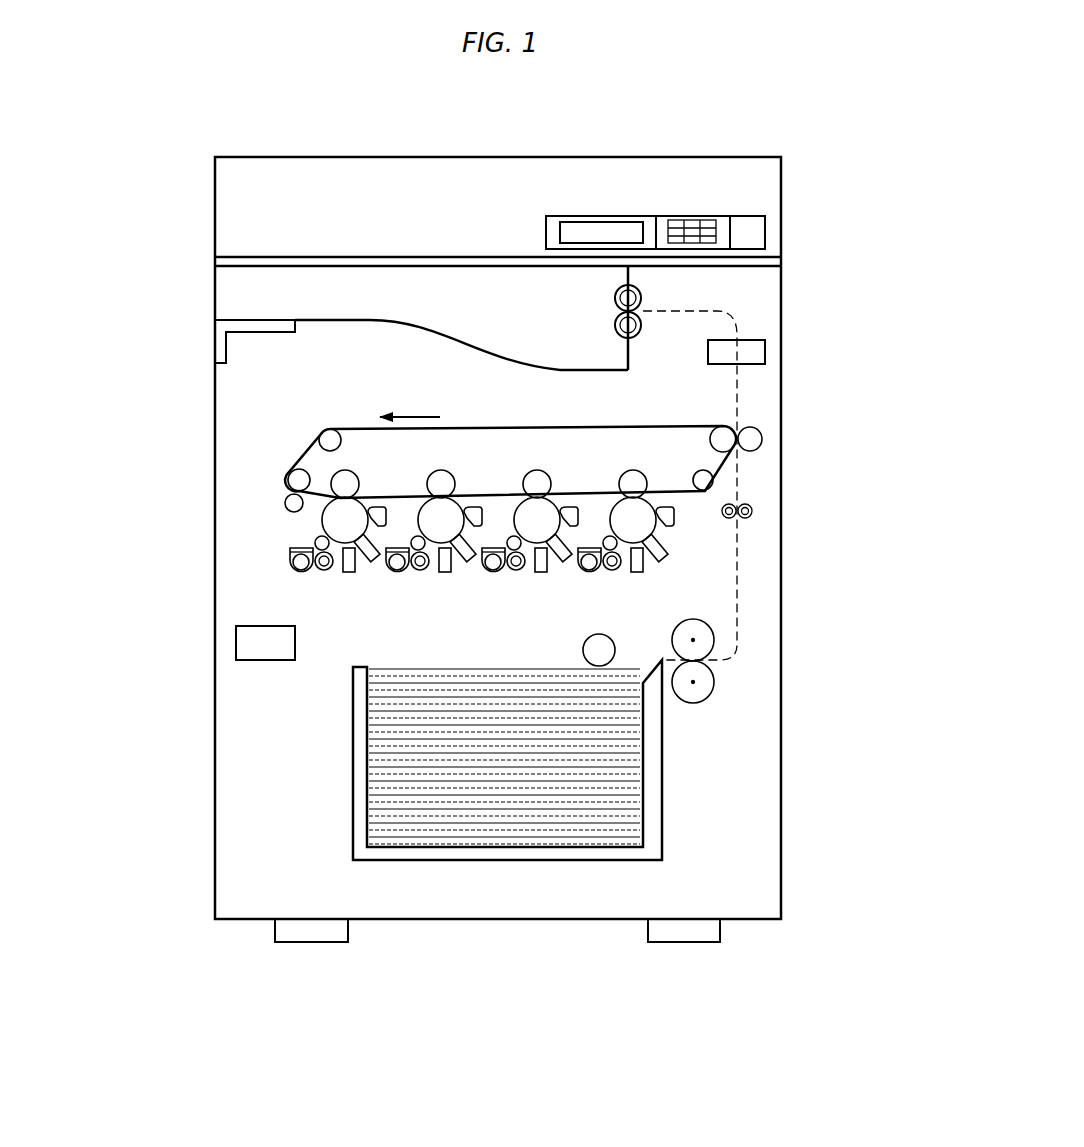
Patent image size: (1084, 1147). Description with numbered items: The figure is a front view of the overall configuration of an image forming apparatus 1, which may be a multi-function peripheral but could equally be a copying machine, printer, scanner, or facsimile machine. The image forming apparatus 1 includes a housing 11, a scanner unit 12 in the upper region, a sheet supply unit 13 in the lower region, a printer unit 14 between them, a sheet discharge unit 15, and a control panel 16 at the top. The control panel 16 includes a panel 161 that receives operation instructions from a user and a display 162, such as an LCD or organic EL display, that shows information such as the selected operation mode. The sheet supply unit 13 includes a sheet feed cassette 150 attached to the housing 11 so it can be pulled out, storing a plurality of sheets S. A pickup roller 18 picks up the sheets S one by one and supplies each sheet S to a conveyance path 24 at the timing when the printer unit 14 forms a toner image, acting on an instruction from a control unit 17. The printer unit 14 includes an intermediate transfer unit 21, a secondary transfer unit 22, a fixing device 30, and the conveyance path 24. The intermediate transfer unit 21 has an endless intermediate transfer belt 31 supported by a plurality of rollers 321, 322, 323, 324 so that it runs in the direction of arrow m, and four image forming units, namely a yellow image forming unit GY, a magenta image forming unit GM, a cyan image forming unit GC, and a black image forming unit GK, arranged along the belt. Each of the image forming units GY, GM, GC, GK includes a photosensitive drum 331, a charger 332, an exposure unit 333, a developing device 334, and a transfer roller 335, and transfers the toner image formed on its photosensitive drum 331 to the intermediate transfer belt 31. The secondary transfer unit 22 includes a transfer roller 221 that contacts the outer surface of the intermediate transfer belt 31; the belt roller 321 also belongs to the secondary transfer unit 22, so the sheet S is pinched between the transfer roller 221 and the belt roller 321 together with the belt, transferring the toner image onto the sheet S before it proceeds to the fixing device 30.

The image forming apparatus 1 is at (752, 138).
The housing 11 is at (782, 479).
The scanner unit 12 is at (782, 176).
The sheet supply unit 13 is at (336, 708).
The printer unit 14 is at (246, 388).
The sheet discharge unit 15 is at (242, 318).
The control panel 16 is at (766, 212).
The control unit 17 is at (236, 641).
The pickup roller 18 is at (585, 650).
The intermediate transfer unit 21 is at (241, 432).
The secondary transfer unit 22 is at (744, 425).
The conveyance path 24 is at (740, 556).
The fixing device 30 is at (764, 337).
The intermediate transfer belt 31 is at (630, 428).
The sheet feed cassette 150 is at (556, 856).
The panel 161 is at (690, 228).
The display 162 is at (600, 228).
The transfer roller 221 is at (762, 437).
The belt roller 321 is at (713, 443).
The roller 322 is at (320, 436).
The roller 323 is at (292, 481).
The roller 324 is at (697, 473).
The photosensitive drum 331 is at (321, 525).
The charger 332 is at (378, 560).
The exposure unit 333 is at (349, 572).
The developing device 334 is at (304, 572).
The transfer roller 335 is at (359, 479).
The yellow image forming unit GY is at (313, 520).
The magenta image forming unit GM is at (406, 516).
The cyan image forming unit GC is at (502, 516).
The black image forming unit GK is at (601, 516).
The sheet S is at (632, 666).